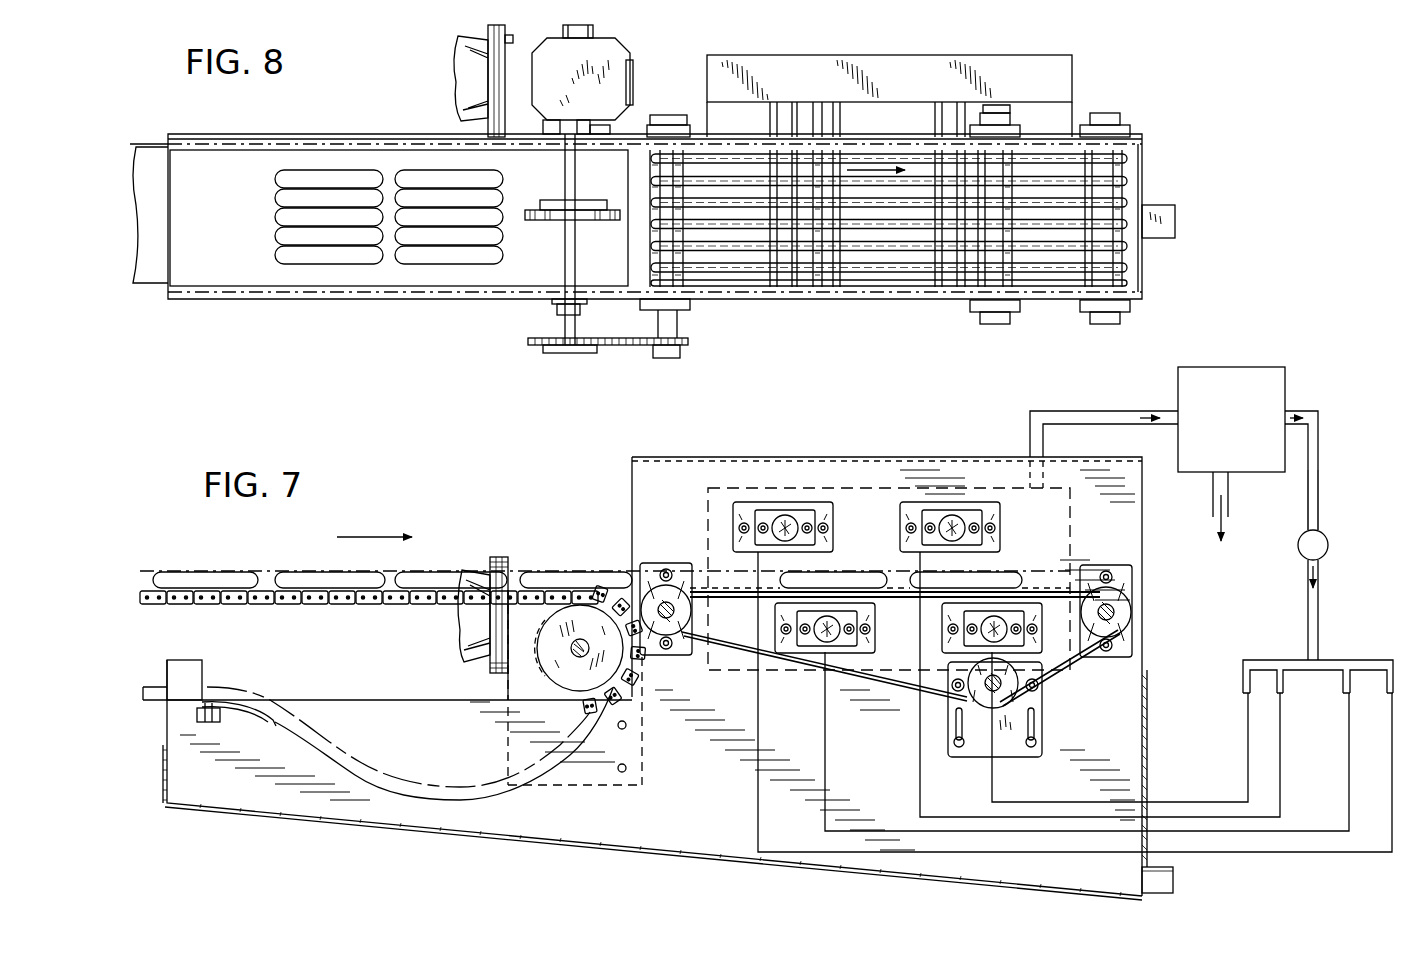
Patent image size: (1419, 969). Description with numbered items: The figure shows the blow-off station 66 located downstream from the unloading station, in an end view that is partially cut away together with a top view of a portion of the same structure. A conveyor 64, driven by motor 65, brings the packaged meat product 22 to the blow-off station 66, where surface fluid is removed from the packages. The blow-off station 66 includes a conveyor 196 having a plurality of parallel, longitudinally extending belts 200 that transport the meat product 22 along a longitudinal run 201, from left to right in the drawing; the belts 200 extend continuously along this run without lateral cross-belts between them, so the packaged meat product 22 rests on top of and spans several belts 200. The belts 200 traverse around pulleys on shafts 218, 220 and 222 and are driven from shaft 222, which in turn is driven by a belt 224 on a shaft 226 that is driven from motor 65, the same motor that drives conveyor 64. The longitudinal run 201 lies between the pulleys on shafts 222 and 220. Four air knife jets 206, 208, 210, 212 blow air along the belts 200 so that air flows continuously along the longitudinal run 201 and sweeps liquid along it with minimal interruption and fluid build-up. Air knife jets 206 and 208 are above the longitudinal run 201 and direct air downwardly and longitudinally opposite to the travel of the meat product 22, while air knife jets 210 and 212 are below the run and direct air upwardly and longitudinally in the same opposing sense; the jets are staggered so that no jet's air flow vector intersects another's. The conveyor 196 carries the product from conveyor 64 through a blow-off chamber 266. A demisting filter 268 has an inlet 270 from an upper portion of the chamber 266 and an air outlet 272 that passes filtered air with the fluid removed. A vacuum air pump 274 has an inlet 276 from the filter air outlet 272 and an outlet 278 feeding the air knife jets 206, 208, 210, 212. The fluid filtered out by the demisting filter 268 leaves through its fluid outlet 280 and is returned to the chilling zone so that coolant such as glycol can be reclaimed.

In FIG. 8, the packaged meat product 22 is at (415, 173).
In FIG. 7, the packaged meat product 22 is at (293, 567).
In FIG. 8, the conveyor 64 is at (353, 151).
In FIG. 7, the conveyor 64 is at (338, 607).
In FIG. 8, the motor 65 is at (610, 57).
In FIG. 8, the blow-off station 66 is at (1087, 112).
In FIG. 7, the blow-off station 66 is at (728, 444).
In FIG. 8, the conveyor 196 is at (873, 283).
In FIG. 7, the conveyor 196 is at (907, 600).
In FIG. 8, the belts 200 is at (1130, 178).
In FIG. 8, the longitudinal run 201 is at (880, 168).
In FIG. 7, the air knife jet 206 is at (785, 517).
In FIG. 7, the air knife jet 208 is at (943, 517).
In FIG. 7, the air knife jet 210 is at (812, 642).
In FIG. 7, the air knife jet 212 is at (1000, 625).
In FIG. 8, the shaft 218 is at (987, 327).
In FIG. 7, the shaft 218 is at (1003, 697).
In FIG. 8, the shaft 220 is at (1108, 323).
In FIG. 7, the shaft 220 is at (1105, 610).
In FIG. 8, the shaft 222 is at (677, 325).
In FIG. 7, the shaft 222 is at (645, 657).
In FIG. 8, the belt 224 is at (613, 350).
In FIG. 8, the shaft 226 is at (560, 313).
In FIG. 7, the blow-off chamber 266 is at (855, 457).
In FIG. 7, the demisting filter 268 is at (1262, 365).
In FIG. 7, the inlet 270 is at (1085, 411).
In FIG. 7, the air outlet 272 is at (1293, 410).
In FIG. 7, the vacuum air pump 274 is at (1330, 538).
In FIG. 7, the inlet 276 is at (1322, 503).
In FIG. 7, the outlet 278 is at (1322, 595).
In FIG. 7, the fluid outlet 280 is at (1213, 490).